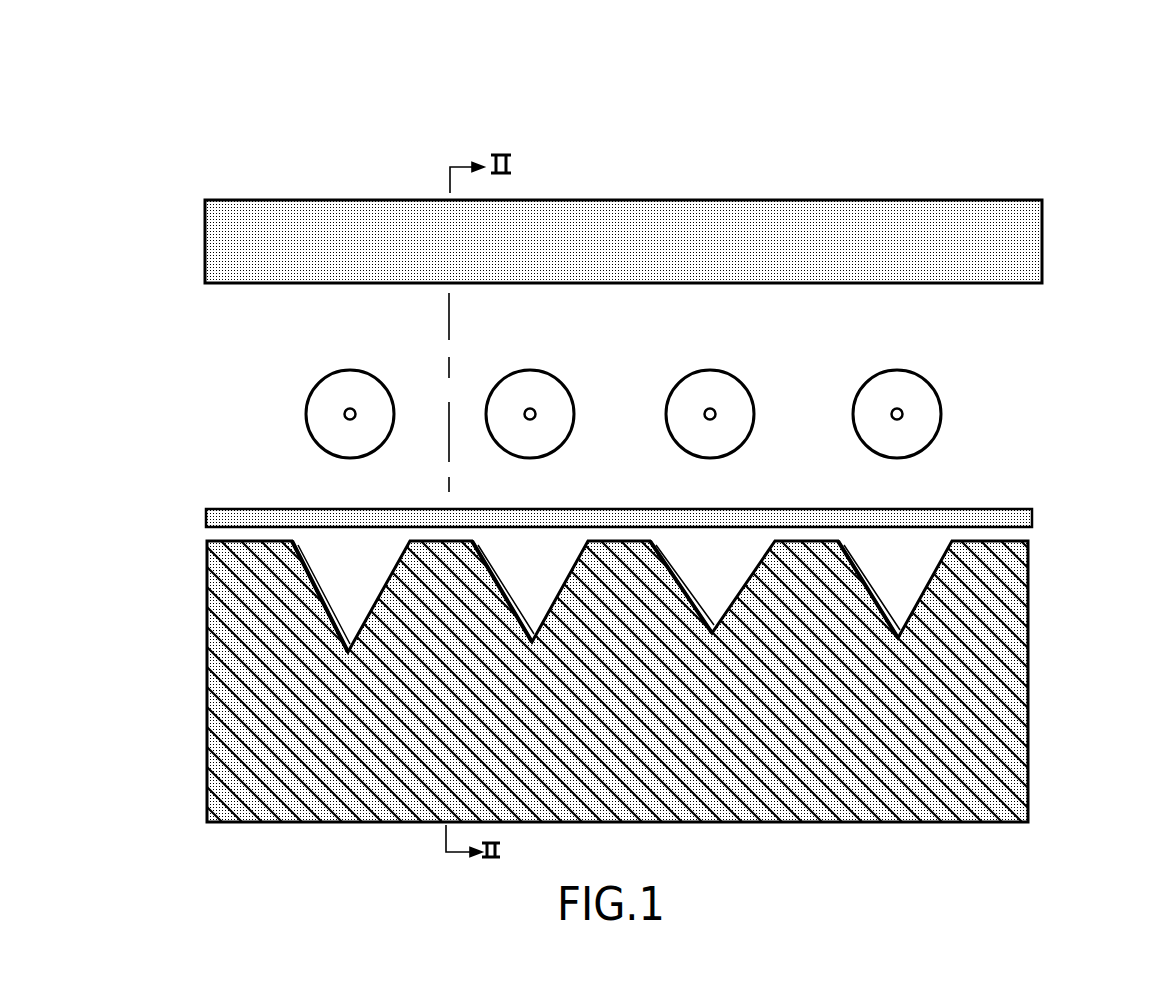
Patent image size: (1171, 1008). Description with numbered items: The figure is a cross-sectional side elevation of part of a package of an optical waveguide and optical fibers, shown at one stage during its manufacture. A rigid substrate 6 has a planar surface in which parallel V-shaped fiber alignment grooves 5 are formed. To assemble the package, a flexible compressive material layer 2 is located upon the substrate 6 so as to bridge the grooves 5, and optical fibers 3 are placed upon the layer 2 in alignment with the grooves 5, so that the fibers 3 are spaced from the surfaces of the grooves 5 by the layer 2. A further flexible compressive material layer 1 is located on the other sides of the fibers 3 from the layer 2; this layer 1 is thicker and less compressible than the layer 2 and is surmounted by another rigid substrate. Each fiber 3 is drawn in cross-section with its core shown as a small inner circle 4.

The flexible compressive material layer 1 is at (658, 187).
The flexible compressive material layer 2 is at (982, 492).
The optical fibers 3 is at (763, 380).
The fiber core 4 is at (547, 400).
The V-shaped fiber alignment grooves 5 is at (343, 552).
The rigid substrate 6 is at (1028, 685).